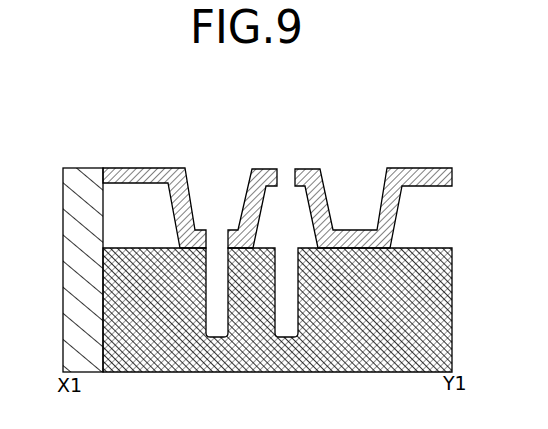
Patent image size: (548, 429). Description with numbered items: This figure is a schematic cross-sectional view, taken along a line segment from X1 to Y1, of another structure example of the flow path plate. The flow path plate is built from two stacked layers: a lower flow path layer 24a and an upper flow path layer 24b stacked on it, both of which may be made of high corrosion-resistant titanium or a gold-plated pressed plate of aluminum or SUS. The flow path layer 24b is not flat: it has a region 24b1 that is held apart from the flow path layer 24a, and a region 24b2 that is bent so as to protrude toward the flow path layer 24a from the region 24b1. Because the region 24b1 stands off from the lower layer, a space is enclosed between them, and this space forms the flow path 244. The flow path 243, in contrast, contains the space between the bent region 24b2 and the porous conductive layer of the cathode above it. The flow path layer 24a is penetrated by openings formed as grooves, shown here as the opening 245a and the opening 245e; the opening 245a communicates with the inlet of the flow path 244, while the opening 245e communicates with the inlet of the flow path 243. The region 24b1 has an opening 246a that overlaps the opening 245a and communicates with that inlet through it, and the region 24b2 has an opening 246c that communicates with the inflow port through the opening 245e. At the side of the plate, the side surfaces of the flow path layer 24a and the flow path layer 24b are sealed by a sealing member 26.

The sealing member 26 is at (83, 362).
The flow path layer 24a is at (362, 357).
The flow path layer 24b is at (308, 110).
The region 24b1 is at (313, 139).
The region 24b2 is at (245, 139).
The flow path 243 is at (357, 207).
The flow path 244 is at (325, 180).
The opening 245a is at (288, 343).
The opening 245e is at (222, 343).
The opening 246a is at (296, 167).
The opening 246c is at (229, 222).